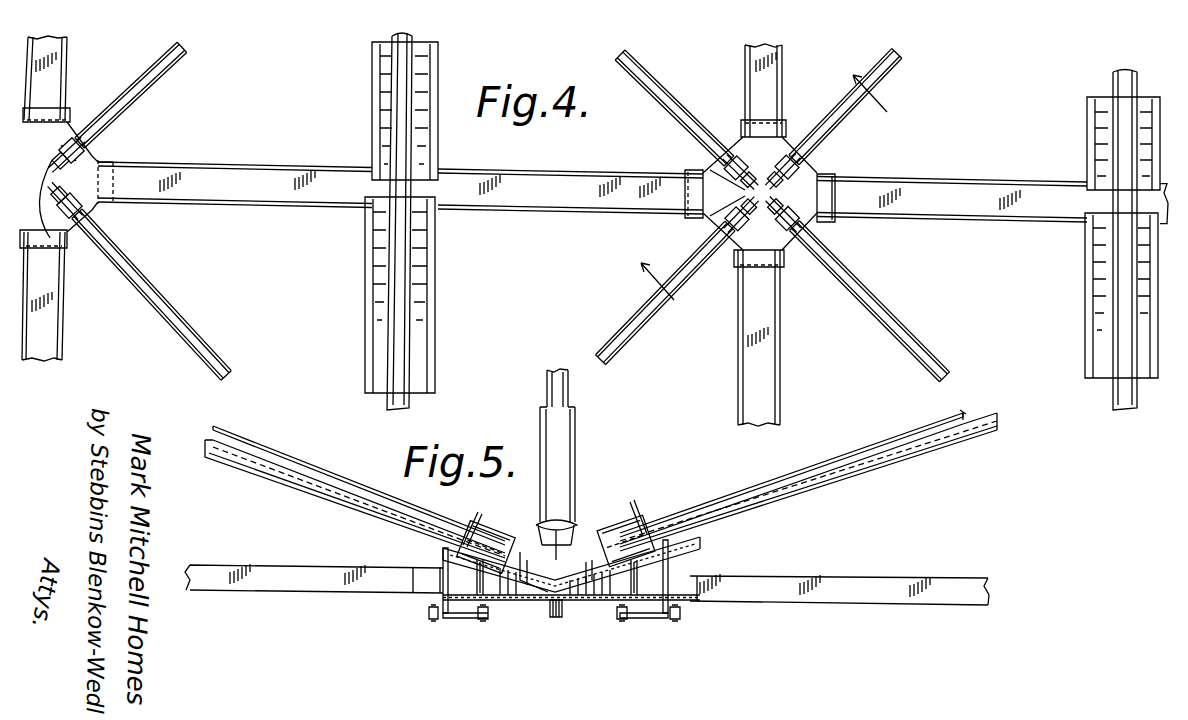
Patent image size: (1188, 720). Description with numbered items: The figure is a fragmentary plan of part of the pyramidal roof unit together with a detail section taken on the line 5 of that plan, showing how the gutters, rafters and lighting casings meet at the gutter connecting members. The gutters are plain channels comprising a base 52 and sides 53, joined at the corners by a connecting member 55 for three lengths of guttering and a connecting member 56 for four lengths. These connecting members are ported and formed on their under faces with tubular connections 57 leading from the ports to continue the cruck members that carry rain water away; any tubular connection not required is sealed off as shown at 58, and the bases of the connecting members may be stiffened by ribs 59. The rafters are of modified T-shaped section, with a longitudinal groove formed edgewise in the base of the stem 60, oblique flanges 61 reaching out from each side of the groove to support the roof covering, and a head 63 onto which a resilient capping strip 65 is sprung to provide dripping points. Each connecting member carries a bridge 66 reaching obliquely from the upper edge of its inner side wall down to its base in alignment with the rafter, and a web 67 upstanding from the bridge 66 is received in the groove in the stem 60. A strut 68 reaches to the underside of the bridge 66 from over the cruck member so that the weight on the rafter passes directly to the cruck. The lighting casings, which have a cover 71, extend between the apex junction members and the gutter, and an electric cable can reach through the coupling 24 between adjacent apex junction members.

In FIG. 4, the section line 5 is at (771, 189).
In FIG. 4, the coupling 24 is at (404, 277).
In FIG. 4, the base 52 is at (48, 334).
In FIG. 5, the base 52 is at (557, 445).
In FIG. 4, the sides 53 is at (332, 194).
In FIG. 5, the sides 53 is at (228, 572).
In FIG. 4, the connecting member for three lengths of guttering 55 is at (106, 158).
In FIG. 4, the connecting member for four lengths of guttering 56 is at (828, 215).
In FIG. 5, the connecting member for four lengths of guttering 56 is at (531, 602).
In FIG. 5, the tubular connections 57 is at (440, 604).
In FIG. 5, the seal 58 is at (455, 618).
In FIG. 5, the ribs 59 is at (560, 612).
In FIG. 5, the stem 60 is at (216, 458).
In FIG. 4, the oblique flanges 61 is at (188, 322).
In FIG. 5, the oblique flanges 61 is at (262, 480).
In FIG. 4, the head 63 is at (92, 204).
In FIG. 5, the head 63 is at (488, 535).
In FIG. 4, the resilient capping strip 65 is at (142, 286).
In FIG. 5, the resilient capping strip 65 is at (292, 459).
In FIG. 4, the bridge 66 is at (84, 140).
In FIG. 5, the bridge 66 is at (572, 596).
In FIG. 4, the web 67 is at (58, 240).
In FIG. 5, the web 67 is at (527, 556).
In FIG. 5, the strut 68 is at (482, 600).
In FIG. 4, the cover 71 is at (423, 80).